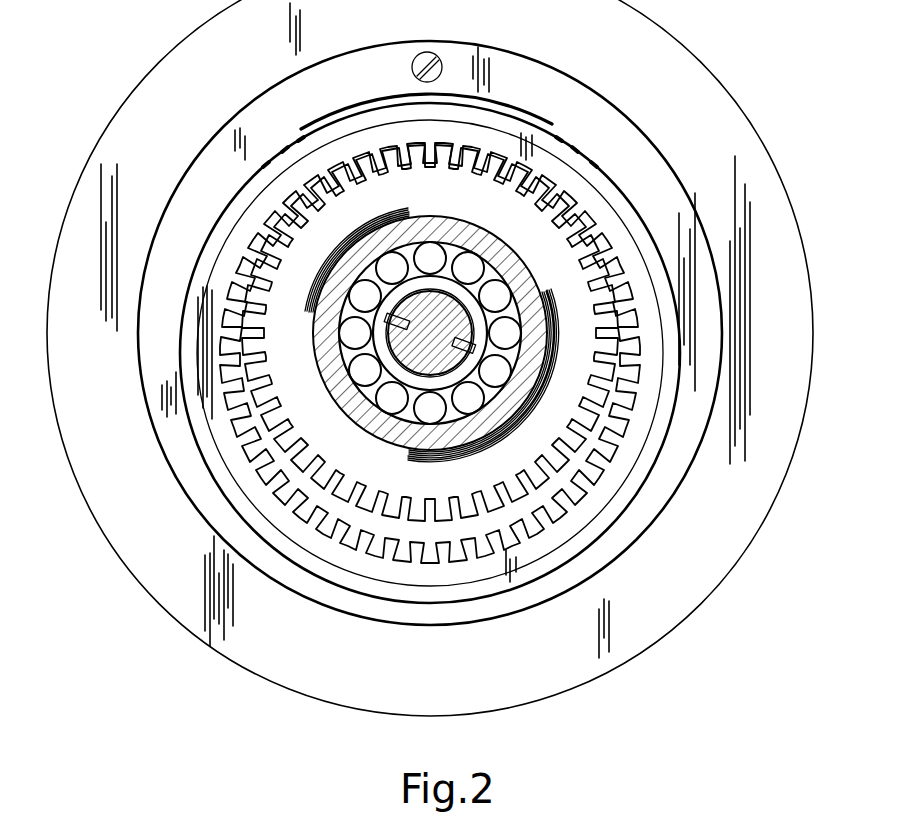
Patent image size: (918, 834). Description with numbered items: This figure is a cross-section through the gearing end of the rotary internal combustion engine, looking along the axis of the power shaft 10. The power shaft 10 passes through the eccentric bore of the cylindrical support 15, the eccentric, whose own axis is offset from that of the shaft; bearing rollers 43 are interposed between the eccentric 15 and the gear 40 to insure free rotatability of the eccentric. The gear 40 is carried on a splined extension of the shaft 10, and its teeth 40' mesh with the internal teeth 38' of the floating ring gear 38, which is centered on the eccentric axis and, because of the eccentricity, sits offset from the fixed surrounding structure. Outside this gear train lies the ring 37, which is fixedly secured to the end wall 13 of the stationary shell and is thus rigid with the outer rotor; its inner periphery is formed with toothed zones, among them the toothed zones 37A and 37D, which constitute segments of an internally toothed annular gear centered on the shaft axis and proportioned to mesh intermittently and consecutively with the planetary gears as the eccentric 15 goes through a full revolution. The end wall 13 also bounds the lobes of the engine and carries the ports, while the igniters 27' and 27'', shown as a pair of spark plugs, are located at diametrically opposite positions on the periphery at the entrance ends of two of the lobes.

The power shaft 10 is at (460, 316).
The end wall 13 is at (153, 596).
The cylindrical support 15 is at (434, 230).
The igniter 27' is at (602, 420).
The igniter 27'' is at (256, 241).
The ring 37 is at (651, 152).
The toothed zone 37A is at (583, 148).
The toothed zone 37D is at (293, 137).
The floating ring gear 38 is at (430, 383).
The internal teeth 38' is at (440, 353).
The gear 40 is at (421, 333).
The teeth 40' is at (394, 333).
The bearing rollers 43 is at (425, 412).